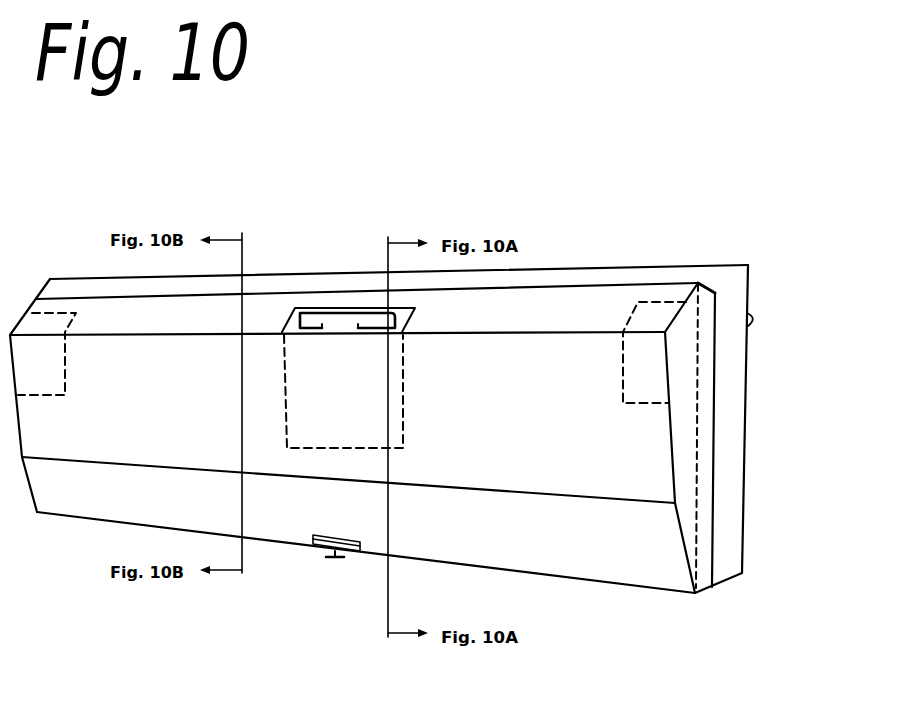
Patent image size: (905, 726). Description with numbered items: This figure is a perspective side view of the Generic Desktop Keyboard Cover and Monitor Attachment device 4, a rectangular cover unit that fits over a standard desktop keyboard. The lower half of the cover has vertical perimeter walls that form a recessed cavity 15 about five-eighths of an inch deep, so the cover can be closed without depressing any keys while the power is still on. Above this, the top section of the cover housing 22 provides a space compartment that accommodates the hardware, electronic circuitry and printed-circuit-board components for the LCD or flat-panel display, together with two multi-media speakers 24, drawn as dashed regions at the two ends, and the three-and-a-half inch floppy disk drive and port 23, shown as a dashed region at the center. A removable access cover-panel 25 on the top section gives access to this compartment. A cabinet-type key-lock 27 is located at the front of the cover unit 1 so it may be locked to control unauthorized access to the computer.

The cabinet body 1 is at (725, 513).
The Generic Desktop Keyboard Cover & Monitor Attachment device 4 is at (667, 592).
The recessed cavity 15 is at (705, 400).
The top section of the Cover housing 22 is at (678, 362).
The floppy disk port 23 is at (354, 426).
The multi-media speakers 24 is at (45, 386).
The removable access cover-panel 25 is at (595, 318).
The Key-lock 27 is at (330, 570).